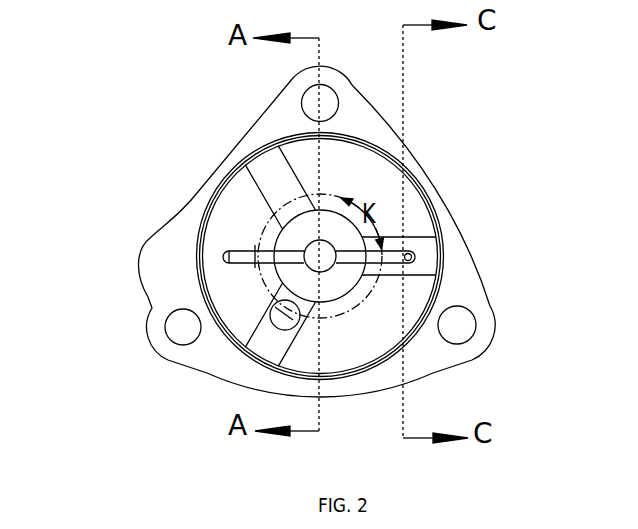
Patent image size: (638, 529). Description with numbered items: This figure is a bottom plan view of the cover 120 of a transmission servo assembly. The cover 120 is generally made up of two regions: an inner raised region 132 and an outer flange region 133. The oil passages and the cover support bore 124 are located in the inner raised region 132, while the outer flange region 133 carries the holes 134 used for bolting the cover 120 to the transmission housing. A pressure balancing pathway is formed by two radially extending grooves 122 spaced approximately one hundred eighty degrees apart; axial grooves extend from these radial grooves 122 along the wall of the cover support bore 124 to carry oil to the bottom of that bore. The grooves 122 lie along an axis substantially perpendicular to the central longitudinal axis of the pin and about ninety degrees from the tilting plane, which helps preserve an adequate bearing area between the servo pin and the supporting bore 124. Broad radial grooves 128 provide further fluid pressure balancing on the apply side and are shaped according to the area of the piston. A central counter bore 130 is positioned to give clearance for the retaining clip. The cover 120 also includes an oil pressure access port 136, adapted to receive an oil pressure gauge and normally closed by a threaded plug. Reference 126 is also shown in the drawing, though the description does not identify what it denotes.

The cover 120 is at (478, 183).
The radially extending grooves 122 is at (268, 252).
The cover support bore 124 is at (325, 272).
The central hub 126 is at (340, 254).
The broad radial grooves 128 is at (438, 255).
The central counter bore 130 is at (283, 276).
The inner raised region 132 is at (440, 283).
The outer flange region 133 is at (475, 272).
The holes 134 is at (307, 104).
The oil pressure access port 136 is at (275, 322).